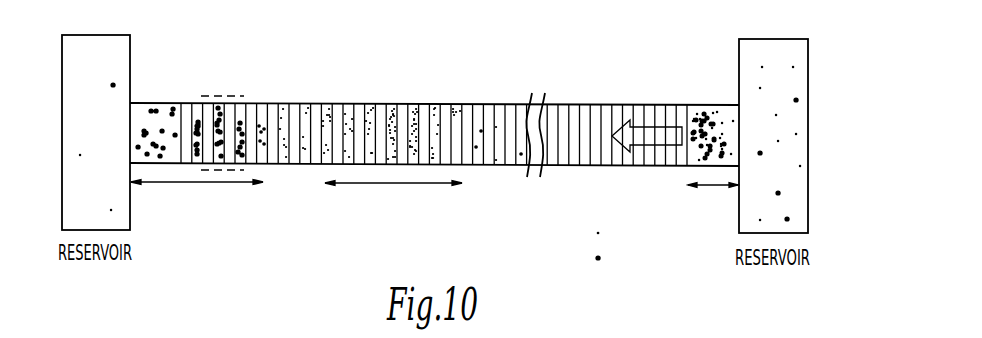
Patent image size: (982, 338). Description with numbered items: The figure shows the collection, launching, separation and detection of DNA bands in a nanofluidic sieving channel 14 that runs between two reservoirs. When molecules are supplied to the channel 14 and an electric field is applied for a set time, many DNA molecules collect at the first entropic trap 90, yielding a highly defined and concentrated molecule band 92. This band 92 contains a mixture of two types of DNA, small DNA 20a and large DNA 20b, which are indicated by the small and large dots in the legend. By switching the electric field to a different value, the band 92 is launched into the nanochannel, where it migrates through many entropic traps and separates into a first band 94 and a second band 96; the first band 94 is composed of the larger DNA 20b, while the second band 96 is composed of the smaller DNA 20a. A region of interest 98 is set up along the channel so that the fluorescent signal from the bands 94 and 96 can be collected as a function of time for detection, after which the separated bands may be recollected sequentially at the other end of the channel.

The nanofluidic sieving channel 14 is at (453, 78).
The first entropic trap 90 is at (700, 72).
The concentrated molecule band 92 is at (707, 187).
The first band 94 is at (196, 184).
The second band 96 is at (392, 184).
The region of interest 98 is at (228, 95).
The small DNA 20a is at (621, 234).
The large DNA 20b is at (621, 258).